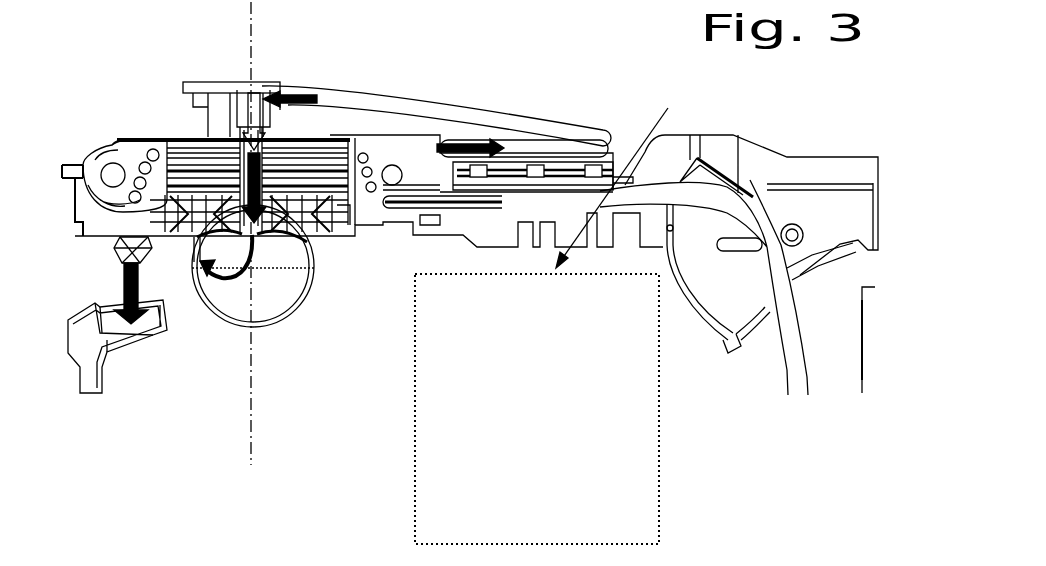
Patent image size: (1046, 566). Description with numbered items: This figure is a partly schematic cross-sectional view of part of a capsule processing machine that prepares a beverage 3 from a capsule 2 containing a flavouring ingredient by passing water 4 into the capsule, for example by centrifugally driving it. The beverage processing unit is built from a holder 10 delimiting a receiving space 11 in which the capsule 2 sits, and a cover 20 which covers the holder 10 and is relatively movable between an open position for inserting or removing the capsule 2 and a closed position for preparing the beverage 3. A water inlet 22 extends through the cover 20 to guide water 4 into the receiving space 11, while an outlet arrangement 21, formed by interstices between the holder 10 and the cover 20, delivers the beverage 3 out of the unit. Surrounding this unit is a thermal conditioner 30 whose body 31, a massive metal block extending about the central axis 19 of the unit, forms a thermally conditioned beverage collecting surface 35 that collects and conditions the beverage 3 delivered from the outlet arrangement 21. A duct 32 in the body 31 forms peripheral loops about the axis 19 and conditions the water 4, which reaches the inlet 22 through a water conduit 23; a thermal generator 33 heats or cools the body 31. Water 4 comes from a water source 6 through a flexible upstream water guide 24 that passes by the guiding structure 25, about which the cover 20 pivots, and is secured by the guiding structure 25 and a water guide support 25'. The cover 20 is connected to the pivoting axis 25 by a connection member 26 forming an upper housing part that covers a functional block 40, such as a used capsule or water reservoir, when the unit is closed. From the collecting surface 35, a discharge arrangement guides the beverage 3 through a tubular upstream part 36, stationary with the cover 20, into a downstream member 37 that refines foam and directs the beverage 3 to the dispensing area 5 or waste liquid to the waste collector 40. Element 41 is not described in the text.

The capsule 2 is at (265, 292).
The beverage 3 is at (118, 306).
The water 4 is at (285, 95).
The dispensing area 5 is at (77, 447).
The water source 6 is at (862, 370).
The holder 10 is at (300, 290).
The receiving space 11 is at (305, 272).
The central axis 19 is at (255, 410).
The cover 20 is at (290, 233).
The outlet arrangement 21 is at (196, 237).
The water inlet 22 is at (227, 160).
The water conduit 23 is at (476, 113).
The upstream water guide 24 is at (797, 405).
The guiding structure 25 is at (807, 273).
The water guide support 25' is at (732, 267).
The connection member 26 is at (762, 162).
The thermal conditioner 30 is at (122, 138).
The body 31 is at (363, 200).
The duct 32 is at (140, 140).
The thermal generator 33 is at (112, 170).
The beverage collecting surface 35 is at (160, 208).
The upstream part 36 is at (140, 262).
The downstream member 37 is at (105, 357).
The functional block 40 is at (660, 447).
The signal line 41 is at (626, 175).